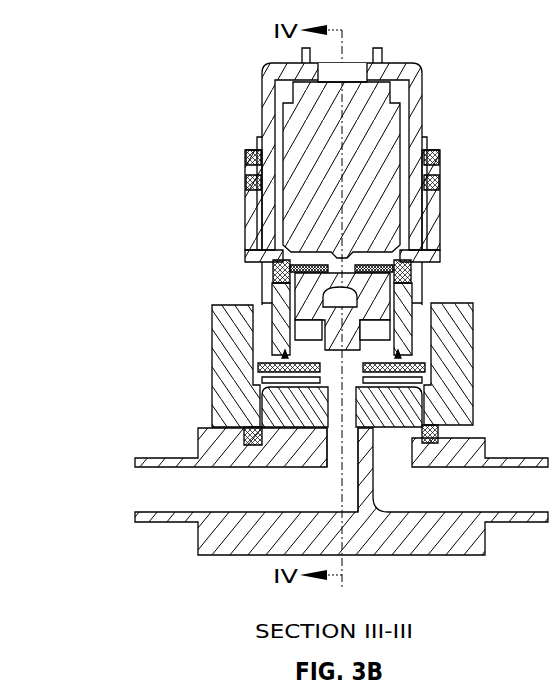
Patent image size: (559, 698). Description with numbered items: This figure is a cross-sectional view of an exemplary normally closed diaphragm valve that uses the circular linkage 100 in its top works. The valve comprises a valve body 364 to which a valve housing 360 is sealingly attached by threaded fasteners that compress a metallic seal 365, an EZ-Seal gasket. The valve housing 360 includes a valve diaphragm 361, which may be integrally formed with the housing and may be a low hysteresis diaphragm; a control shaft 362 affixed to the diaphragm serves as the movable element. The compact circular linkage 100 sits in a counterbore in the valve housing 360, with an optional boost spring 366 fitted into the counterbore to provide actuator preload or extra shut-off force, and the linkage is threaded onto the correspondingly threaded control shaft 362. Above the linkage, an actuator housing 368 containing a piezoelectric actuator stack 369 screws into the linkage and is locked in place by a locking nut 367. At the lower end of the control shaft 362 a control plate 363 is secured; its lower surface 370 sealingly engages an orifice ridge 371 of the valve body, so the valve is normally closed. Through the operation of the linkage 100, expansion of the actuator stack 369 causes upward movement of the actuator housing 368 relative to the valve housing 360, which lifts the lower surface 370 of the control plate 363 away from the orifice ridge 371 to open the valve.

The circular linkage 100 is at (247, 242).
The valve housing 360 is at (210, 382).
The valve diaphragm 361 is at (408, 380).
The control shaft 362 is at (262, 303).
The control plate 363 is at (275, 398).
The valve body 364 is at (198, 538).
The metallic seal 365 is at (198, 433).
The boost spring 366 is at (212, 330).
The locking nut 367 is at (247, 162).
The actuator housing 368 is at (260, 115).
The piezoelectric actuator stack 369 is at (353, 63).
The lower surface 370 is at (391, 425).
The orifice ridge 371 is at (320, 428).